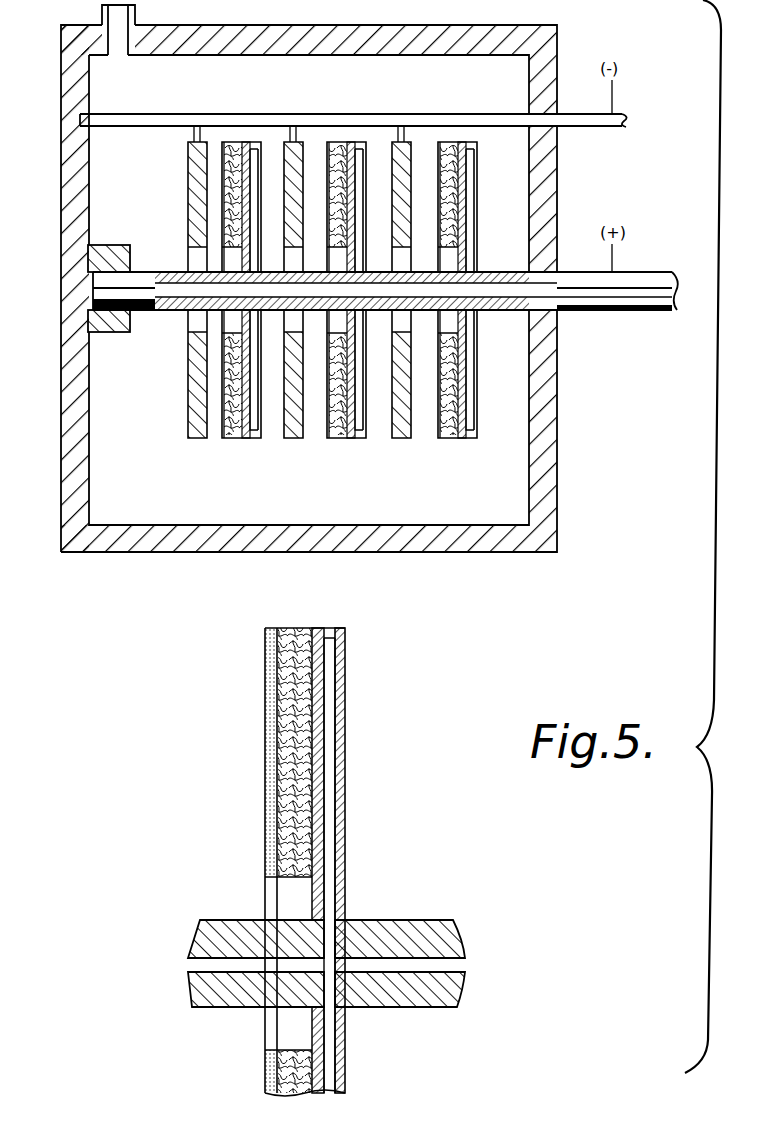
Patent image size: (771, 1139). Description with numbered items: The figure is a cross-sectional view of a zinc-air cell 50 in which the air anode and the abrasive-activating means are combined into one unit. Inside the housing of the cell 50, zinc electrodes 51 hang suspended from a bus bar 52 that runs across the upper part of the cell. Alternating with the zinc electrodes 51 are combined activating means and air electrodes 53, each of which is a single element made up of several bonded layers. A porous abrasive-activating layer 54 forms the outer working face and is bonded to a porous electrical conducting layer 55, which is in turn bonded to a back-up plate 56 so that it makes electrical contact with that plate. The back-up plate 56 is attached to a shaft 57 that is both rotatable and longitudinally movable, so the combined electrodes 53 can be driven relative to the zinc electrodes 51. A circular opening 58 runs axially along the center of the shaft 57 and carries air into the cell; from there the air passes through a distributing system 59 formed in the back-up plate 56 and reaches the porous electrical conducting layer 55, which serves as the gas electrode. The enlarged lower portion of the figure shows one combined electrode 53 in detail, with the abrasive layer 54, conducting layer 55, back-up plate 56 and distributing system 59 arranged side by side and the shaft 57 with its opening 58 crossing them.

The cell 50 is at (67, 202).
The zinc electrodes 51 is at (188, 173).
The bus bar 52 is at (160, 118).
The combined activating means and air electrode 53 is at (345, 140).
The porous abrasive-activating layer 54 is at (225, 140).
The porous electrical conducting layer 55 is at (244, 140).
The back-up plate 56 is at (228, 393).
The shaft 57 is at (163, 272).
The circular opening 58 is at (142, 313).
The distributing system 59 is at (252, 382).